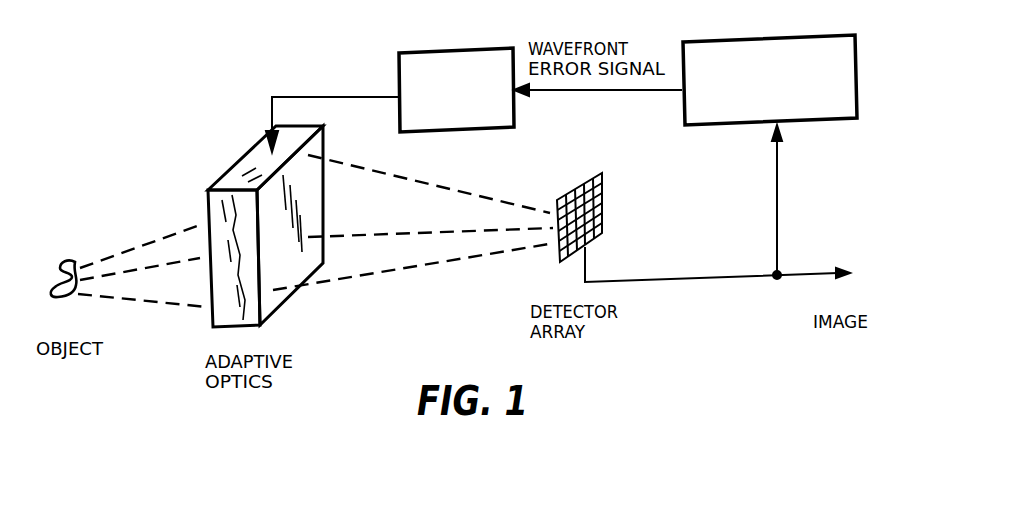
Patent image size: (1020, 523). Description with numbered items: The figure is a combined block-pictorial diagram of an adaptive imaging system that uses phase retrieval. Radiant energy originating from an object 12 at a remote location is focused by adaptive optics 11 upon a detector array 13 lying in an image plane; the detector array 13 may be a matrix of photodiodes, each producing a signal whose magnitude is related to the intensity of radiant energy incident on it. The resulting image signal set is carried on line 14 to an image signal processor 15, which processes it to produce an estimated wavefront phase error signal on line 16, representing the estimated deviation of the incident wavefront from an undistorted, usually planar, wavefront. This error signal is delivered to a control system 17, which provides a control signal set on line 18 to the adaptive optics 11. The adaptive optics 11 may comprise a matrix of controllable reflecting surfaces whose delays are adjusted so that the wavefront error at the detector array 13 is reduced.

The adaptive optics 11 is at (248, 290).
The object 12 is at (63, 262).
The detector array 13 is at (600, 197).
The line 14 is at (685, 278).
The image signal processor 15 is at (790, 38).
The line 16 is at (578, 92).
The control system 17 is at (453, 50).
The line 18 is at (312, 95).